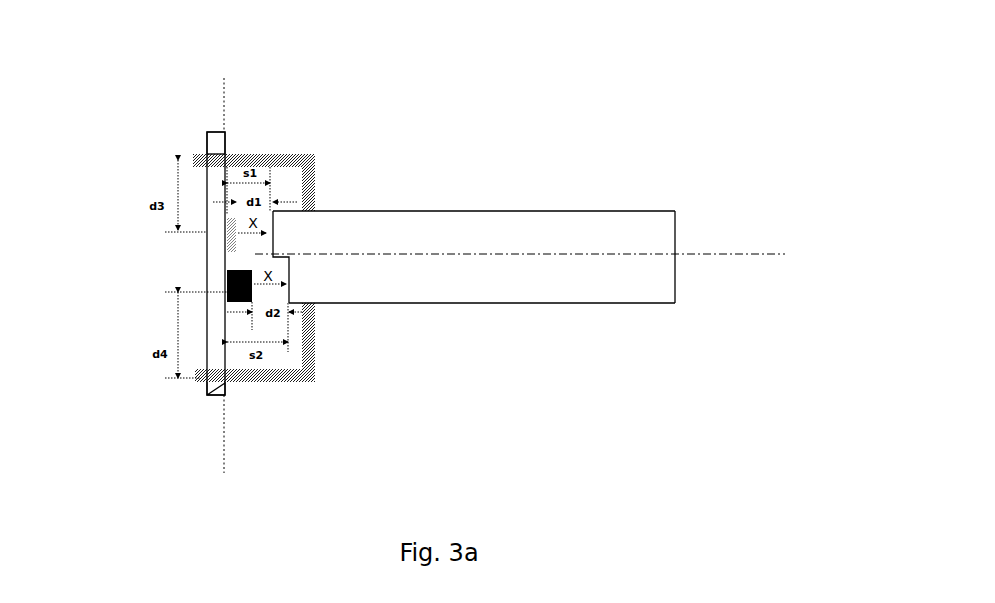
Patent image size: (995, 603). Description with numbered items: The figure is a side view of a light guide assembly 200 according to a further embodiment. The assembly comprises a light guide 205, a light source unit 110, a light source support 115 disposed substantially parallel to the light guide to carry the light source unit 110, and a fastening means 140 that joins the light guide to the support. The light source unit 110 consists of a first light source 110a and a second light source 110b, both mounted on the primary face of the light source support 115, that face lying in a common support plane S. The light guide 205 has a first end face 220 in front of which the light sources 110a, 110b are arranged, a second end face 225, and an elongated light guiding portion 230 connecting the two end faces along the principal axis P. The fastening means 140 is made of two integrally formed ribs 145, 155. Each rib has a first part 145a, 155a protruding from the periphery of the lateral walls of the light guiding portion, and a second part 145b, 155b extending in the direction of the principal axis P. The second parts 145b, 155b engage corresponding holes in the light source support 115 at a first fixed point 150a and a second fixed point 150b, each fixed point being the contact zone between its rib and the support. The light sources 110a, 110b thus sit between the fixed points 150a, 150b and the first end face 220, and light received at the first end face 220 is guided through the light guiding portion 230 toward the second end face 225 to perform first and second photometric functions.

The light source unit 110 is at (83, 263).
The first light source 110a is at (156, 262).
The second light source 110b is at (167, 309).
The light source support 115 is at (214, 225).
The fastening means 140 is at (307, 264).
The first rib 145 is at (305, 50).
The first part of first rib 145a is at (316, 183).
The second part of first rib 145b is at (268, 153).
The first fixed point 150a is at (181, 112).
The second fixed point 150b is at (187, 420).
The second rib 155 is at (305, 480).
The first part of second rib 155a is at (322, 348).
The second part of second rib 155b is at (262, 420).
The light guide assembly 200 is at (516, 169).
The light guide 205 is at (464, 210).
The first end face 220 is at (273, 257).
The second end face 225 is at (676, 243).
The light guiding portion 230 is at (540, 227).
The common support plane S is at (226, 405).
The principal axis P is at (520, 265).